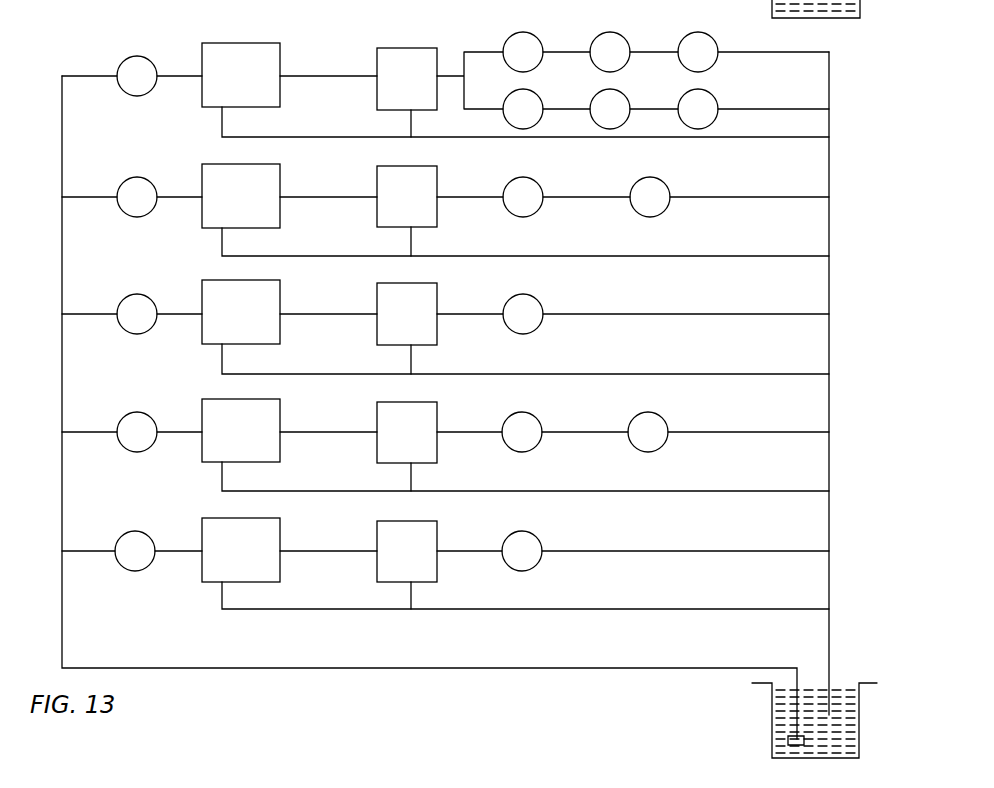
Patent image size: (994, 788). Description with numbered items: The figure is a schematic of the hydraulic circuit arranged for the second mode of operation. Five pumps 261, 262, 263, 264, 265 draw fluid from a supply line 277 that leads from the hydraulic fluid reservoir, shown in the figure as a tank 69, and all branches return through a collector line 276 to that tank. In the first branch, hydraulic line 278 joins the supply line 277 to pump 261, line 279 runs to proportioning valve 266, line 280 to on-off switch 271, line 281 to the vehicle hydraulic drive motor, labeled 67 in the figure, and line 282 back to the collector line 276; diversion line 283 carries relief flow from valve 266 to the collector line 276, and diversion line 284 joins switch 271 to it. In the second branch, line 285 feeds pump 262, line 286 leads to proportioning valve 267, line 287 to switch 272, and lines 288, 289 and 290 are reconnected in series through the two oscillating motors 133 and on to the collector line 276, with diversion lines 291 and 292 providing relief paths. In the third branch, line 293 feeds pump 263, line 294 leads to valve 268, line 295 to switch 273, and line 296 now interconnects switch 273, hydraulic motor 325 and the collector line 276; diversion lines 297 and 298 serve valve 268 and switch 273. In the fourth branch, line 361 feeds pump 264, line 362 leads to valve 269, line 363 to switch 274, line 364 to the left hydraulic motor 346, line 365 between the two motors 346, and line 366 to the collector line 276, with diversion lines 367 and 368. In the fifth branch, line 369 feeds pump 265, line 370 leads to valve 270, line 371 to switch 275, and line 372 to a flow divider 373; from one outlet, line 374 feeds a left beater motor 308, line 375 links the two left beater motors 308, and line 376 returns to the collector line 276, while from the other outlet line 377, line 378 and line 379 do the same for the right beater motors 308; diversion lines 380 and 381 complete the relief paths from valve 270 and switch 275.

The spray manifold 67 is at (528, 532).
The tank 69 is at (772, 740).
The oscillating motor 133 is at (537, 445).
The hydraulic pump 261 is at (150, 562).
The hydraulic pump 262 is at (144, 448).
The hydraulic pump 263 is at (148, 327).
The hydraulic pump 264 is at (152, 210).
The hydraulic pump 265 is at (122, 64).
The proportioning valve 266 is at (222, 515).
The proportioning valve 267 is at (223, 398).
The proportioning valve 268 is at (212, 281).
The proportioning valve 269 is at (257, 163).
The proportioning valve 270 is at (258, 43).
The on-off switch 271 is at (376, 561).
The on-off switch 272 is at (374, 441).
The on-off switch 273 is at (376, 324).
The on-off switch 274 is at (375, 211).
The on-off switch 275 is at (376, 91).
The hydraulic collector line 276 is at (830, 302).
The hydraulic supply line 277 is at (74, 668).
The hydraulic line 278 is at (88, 552).
The hydraulic line 279 is at (183, 547).
The hydraulic line 280 is at (348, 546).
The hydraulic line 281 is at (467, 551).
The hydraulic line 282 is at (585, 548).
The diversion line 283 is at (228, 607).
The diversion line 284 is at (411, 597).
The hydraulic line 285 is at (90, 433).
The hydraulic line 286 is at (173, 430).
The hydraulic line 287 is at (345, 430).
The hydraulic line 288 is at (463, 432).
The hydraulic line 289 is at (587, 432).
The hydraulic line 290 is at (752, 433).
The diversion line 291 is at (224, 491).
The diversion line 292 is at (411, 477).
The hydraulic line 293 is at (93, 314).
The hydraulic line 294 is at (173, 310).
The hydraulic line 295 is at (350, 308).
The hydraulic line 296 is at (468, 313).
The diversion line 297 is at (224, 374).
The diversion line 298 is at (411, 360).
The beater motor 308 is at (682, 43).
The hydraulic motor 325 is at (536, 299).
The hydraulic motor 346 is at (538, 209).
The hydraulic line 361 is at (92, 199).
The hydraulic line 362 is at (185, 195).
The hydraulic line 363 is at (348, 195).
The hydraulic line 364 is at (468, 197).
The hydraulic line 365 is at (592, 197).
The hydraulic line 366 is at (755, 196).
The diversion line 367 is at (224, 256).
The diversion line 368 is at (411, 243).
The hydraulic line 369 is at (94, 78).
The hydraulic line 370 is at (192, 74).
The hydraulic line 371 is at (340, 72).
The hydraulic line 372 is at (450, 76).
The flow divider 373 is at (513, 34).
The hydraulic line 374 is at (563, 52).
The hydraulic line 375 is at (658, 52).
The hydraulic line 376 is at (793, 52).
The hydraulic line 377 is at (573, 108).
The hydraulic line 378 is at (657, 94).
The hydraulic line 379 is at (795, 110).
The diversion line 380 is at (223, 137).
The diversion line 381 is at (411, 125).